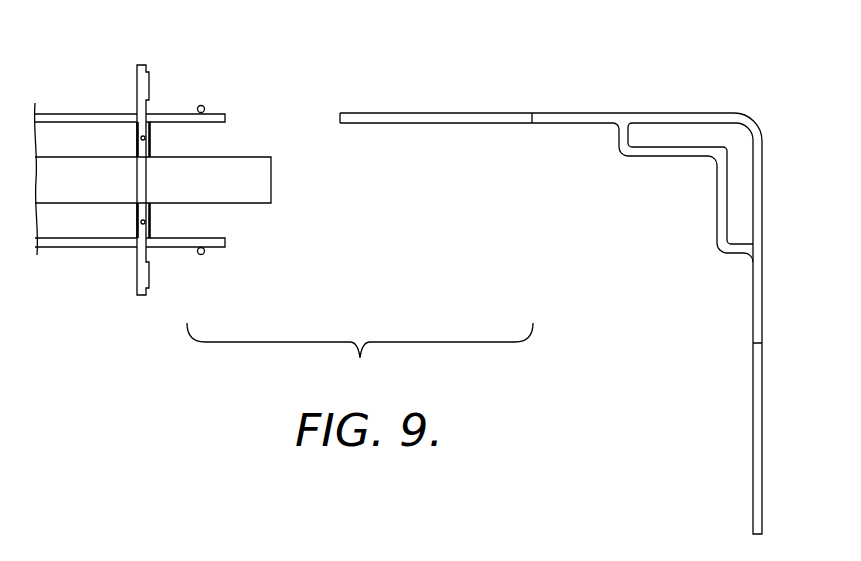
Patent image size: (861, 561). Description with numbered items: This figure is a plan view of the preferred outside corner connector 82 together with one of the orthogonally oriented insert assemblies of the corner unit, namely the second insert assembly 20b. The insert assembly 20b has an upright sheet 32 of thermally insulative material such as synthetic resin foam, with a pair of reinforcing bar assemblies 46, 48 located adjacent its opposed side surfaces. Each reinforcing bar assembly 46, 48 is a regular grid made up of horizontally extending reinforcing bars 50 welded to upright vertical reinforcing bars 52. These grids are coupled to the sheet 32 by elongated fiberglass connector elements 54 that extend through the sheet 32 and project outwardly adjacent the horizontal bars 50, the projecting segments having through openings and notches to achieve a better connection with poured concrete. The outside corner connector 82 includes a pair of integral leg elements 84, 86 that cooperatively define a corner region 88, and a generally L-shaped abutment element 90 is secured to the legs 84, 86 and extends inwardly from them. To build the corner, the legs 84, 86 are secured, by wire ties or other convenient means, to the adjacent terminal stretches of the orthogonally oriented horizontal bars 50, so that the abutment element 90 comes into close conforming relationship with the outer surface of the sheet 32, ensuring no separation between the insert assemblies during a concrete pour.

The second insert assembly 20b is at (187, 200).
The sheet 32 is at (280, 217).
The reinforcing bar assembly 46 is at (198, 270).
The reinforcing bar assembly 48 is at (221, 74).
The horizontally extending reinforcing bars 50 is at (58, 118).
The vertical reinforcing bars 52 is at (205, 107).
The connector elements 54 is at (125, 69).
The outside corner connector 82 is at (582, 273).
The leg element 84 is at (478, 118).
The leg element 86 is at (757, 447).
The corner region 88 is at (768, 103).
The abutment element 90 is at (722, 185).